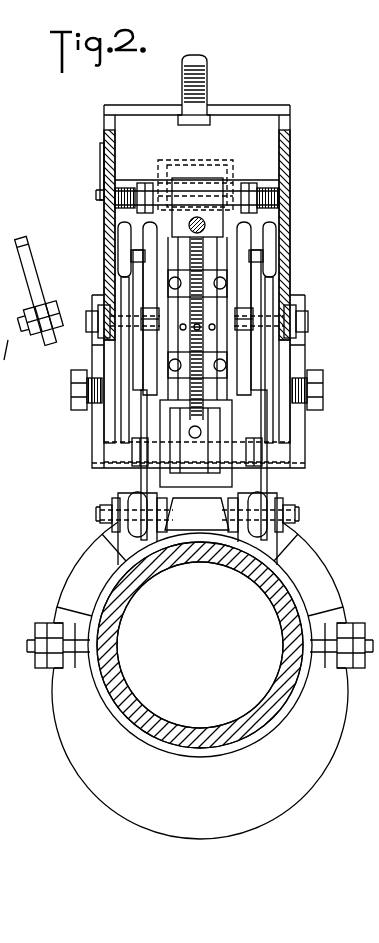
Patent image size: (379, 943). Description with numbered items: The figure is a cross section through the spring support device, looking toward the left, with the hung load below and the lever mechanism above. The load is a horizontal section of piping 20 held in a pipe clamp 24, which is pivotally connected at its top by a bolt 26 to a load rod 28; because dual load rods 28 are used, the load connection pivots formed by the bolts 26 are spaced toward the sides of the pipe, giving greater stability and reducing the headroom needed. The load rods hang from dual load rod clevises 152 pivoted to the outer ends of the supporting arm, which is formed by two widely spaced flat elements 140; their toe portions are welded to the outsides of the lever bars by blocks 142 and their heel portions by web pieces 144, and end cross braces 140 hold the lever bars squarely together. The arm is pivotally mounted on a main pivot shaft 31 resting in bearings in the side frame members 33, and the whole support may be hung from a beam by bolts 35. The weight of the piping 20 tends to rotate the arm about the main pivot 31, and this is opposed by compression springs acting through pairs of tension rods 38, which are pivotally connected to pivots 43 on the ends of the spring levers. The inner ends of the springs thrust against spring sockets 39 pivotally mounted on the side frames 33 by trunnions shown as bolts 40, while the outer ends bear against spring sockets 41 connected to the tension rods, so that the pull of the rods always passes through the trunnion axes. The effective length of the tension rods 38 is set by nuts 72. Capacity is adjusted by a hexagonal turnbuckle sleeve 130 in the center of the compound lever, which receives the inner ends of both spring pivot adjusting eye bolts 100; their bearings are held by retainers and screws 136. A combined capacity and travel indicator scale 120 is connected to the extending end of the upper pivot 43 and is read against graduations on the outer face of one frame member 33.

The piping 20 is at (253, 593).
The pipe clamp 24 is at (103, 580).
The bolt 26 is at (100, 515).
The load rod 28 is at (133, 474).
The main pivot shaft 31 is at (88, 322).
The side frame members 33 is at (291, 148).
The bolts 35 is at (202, 62).
The tension rods 38 is at (203, 218).
The spring sockets 39 is at (98, 428).
The bolts 40 is at (71, 390).
The spring sockets 41 is at (24, 238).
The pivots 43 is at (263, 197).
The nuts 72 is at (33, 338).
The spring pivot adjusting eye bolts 100 is at (203, 275).
The capacity and travel indicator scale 120 is at (100, 150).
The hexagonal turnbuckle sleeve 130 is at (183, 302).
The screws 136 is at (175, 372).
The flat elements 140 is at (186, 160).
The blocks 142 is at (243, 385).
The web pieces 144 is at (246, 258).
The load rod clevises 152 is at (268, 228).